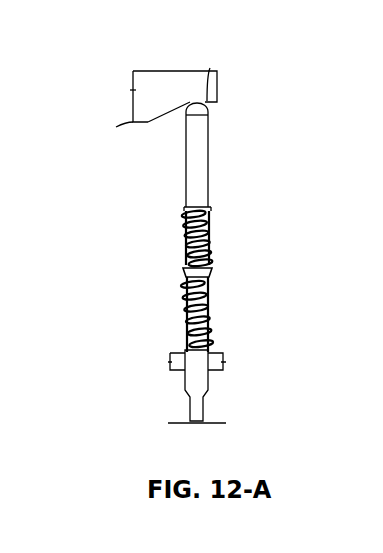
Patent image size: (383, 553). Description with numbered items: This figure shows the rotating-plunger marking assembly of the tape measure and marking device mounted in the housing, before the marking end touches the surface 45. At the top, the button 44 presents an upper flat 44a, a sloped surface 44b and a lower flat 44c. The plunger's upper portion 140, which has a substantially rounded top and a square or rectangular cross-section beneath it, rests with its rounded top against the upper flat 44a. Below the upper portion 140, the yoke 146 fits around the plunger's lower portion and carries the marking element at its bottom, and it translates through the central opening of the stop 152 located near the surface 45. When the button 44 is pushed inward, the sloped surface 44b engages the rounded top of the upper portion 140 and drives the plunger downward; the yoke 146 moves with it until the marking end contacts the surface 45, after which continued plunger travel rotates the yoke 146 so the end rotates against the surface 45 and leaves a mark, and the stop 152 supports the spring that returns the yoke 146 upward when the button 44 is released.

The button 44 is at (167, 84).
The upper flat 44a is at (210, 68).
The sloped surface 44b is at (150, 119).
The lower flat 44c is at (116, 127).
The upper portion 140 is at (197, 160).
The yoke 146 is at (191, 315).
The stop 152 is at (172, 364).
The surface 45 is at (215, 421).